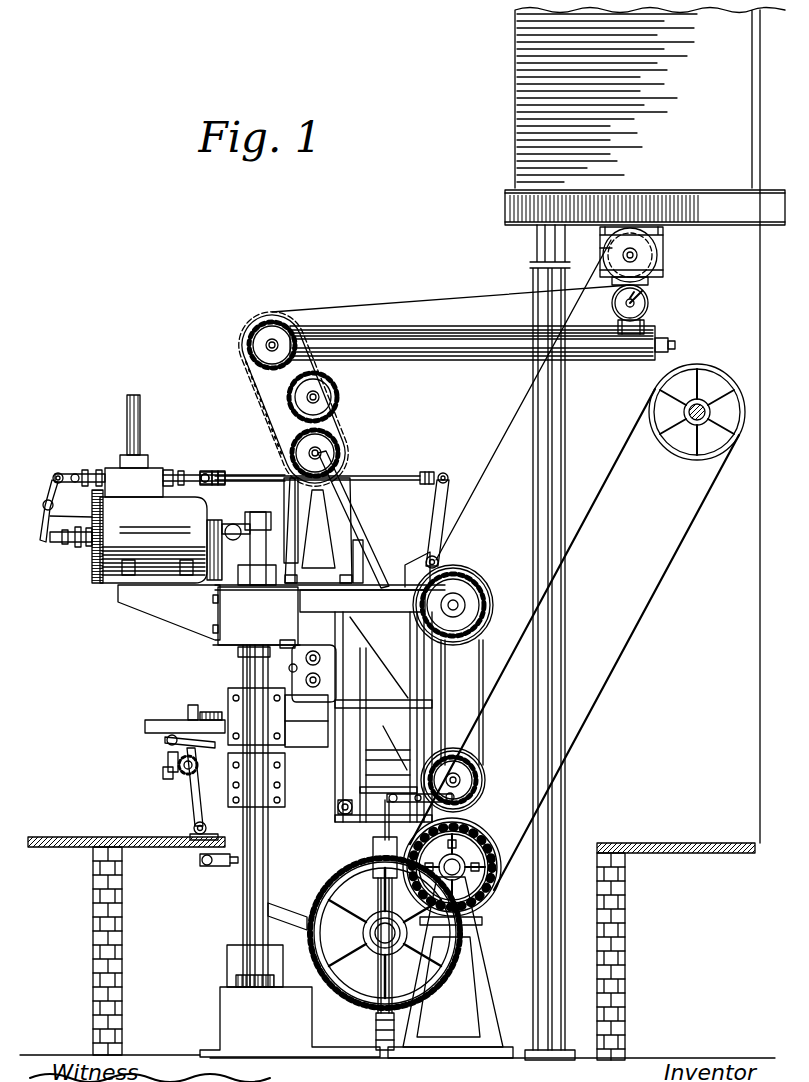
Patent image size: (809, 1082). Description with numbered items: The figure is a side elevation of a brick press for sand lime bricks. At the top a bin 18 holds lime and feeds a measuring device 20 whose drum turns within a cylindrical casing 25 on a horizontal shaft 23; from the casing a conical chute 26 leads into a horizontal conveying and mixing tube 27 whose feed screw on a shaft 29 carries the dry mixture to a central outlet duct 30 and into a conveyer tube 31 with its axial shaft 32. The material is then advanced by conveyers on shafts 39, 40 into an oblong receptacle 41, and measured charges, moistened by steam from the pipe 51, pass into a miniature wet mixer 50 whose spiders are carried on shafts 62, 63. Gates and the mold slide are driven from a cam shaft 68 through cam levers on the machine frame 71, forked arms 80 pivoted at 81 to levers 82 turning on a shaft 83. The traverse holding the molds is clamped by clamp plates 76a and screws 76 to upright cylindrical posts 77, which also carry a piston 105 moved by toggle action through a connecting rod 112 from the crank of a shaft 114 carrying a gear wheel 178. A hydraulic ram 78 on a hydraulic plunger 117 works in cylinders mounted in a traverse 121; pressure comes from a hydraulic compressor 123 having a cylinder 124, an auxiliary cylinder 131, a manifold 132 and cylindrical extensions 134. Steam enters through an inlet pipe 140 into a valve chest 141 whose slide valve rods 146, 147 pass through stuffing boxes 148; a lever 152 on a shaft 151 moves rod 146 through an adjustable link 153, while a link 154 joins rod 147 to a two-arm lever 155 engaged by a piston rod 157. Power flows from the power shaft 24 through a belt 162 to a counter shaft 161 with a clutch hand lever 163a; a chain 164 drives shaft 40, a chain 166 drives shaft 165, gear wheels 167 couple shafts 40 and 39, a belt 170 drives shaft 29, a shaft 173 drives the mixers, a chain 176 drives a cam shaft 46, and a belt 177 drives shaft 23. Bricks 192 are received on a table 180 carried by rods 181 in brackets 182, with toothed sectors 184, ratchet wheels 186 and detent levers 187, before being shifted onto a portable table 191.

The bin 18 is at (650, 98).
The measuring device 20 is at (665, 262).
The horizontal shaft 23 is at (640, 253).
The power shaft 24 is at (670, 455).
The cylindrical casing 25 is at (625, 252).
The conical chute 26 is at (650, 283).
The horizontal conveying and mixing tube 27 is at (652, 303).
The shaft 29 is at (615, 308).
The central outlet duct 30 is at (645, 325).
The conveyer tube 31 is at (474, 355).
The shaft 32 is at (668, 348).
The shaft 39 is at (325, 397).
The shaft 40 is at (325, 451).
The oblong receptacle 41 is at (343, 492).
The cam shaft 46 is at (460, 598).
The miniature wet mixer 50 is at (320, 660).
The pipe 51 is at (375, 555).
The shaft 62 is at (313, 650).
The shaft 63 is at (318, 680).
The cam shaft 68 is at (465, 780).
The machine frame 71 is at (383, 715).
The screw 76 is at (240, 695).
The clamp plate 76a is at (258, 725).
The upright cylindrical post 77 is at (268, 858).
The hydraulic ram 78 is at (245, 668).
The forked arm 80 is at (355, 775).
The pivot 81 is at (340, 808).
The lever 82 is at (340, 755).
The shaft 83 is at (345, 810).
The piston 105 is at (260, 778).
The connecting rod 112 is at (286, 918).
The shaft 114 is at (385, 935).
The hydraulic plunger 117 is at (285, 645).
The traverse 121 is at (256, 616).
The hydraulic compressor 123 is at (83, 572).
The cylinder 124 is at (161, 540).
The auxiliary cylinder 131 is at (215, 588).
The manifold 132 is at (245, 535).
The cylindrical extension 134 is at (283, 515).
The inlet pipe 140 is at (140, 413).
The valve chest 141 is at (134, 483).
The rod 146 is at (195, 476).
The rod 147 is at (80, 472).
The stuffing box 148 is at (145, 462).
The shaft 151 is at (440, 558).
The lever 152 is at (445, 508).
The adjustable link 153 is at (400, 478).
The link 154 is at (60, 472).
The two-arm lever 155 is at (48, 500).
The piston rod 157 is at (60, 542).
The counter shaft 161 is at (457, 855).
The belt 162 is at (625, 668).
The hand lever 163a is at (197, 808).
The chain 164 is at (376, 688).
The shaft 165 is at (265, 345).
The chain 166 is at (258, 383).
The gear wheels 167 is at (292, 432).
The belt 170 is at (440, 300).
The shaft 173 is at (395, 833).
The chain 176 is at (485, 718).
The belt 177 is at (485, 472).
The gear wheel 178 is at (310, 990).
The table 180 is at (190, 715).
The rod 181 is at (208, 805).
The bracket 182 is at (165, 740).
The toothed sector 184 is at (180, 772).
The ratchet wheel 186 is at (170, 757).
The detent lever 187 is at (163, 770).
The portable table 191 is at (150, 725).
The brick 192 is at (222, 718).